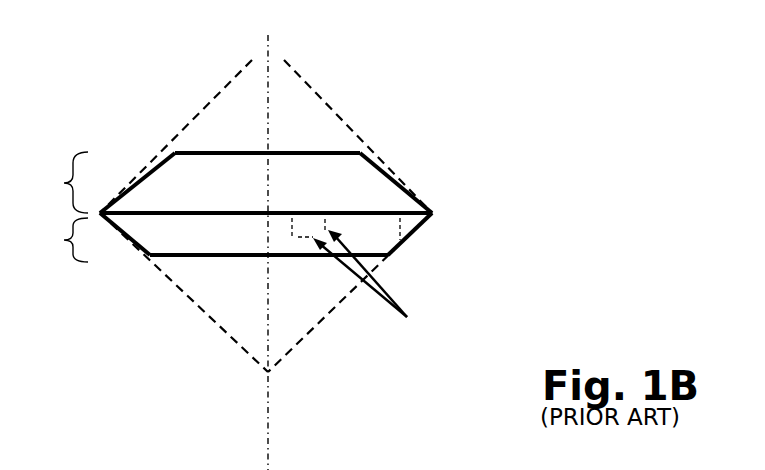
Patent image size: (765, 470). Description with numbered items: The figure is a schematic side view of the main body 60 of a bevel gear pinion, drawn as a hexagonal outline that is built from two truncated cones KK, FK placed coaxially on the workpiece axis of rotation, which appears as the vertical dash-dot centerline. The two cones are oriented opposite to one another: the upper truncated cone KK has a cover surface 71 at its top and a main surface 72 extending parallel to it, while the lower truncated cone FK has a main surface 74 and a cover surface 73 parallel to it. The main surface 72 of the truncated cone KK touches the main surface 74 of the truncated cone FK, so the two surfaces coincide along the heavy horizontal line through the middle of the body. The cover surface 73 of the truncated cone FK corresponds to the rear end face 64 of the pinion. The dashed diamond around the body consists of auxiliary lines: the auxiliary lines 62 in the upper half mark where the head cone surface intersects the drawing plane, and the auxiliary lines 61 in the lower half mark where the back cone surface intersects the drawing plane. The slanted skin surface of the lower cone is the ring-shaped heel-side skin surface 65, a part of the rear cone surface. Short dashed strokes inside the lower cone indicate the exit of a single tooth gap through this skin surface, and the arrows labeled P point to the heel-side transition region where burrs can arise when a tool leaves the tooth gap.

The main body 60 is at (287, 210).
The auxiliary lines 61 is at (230, 333).
The auxiliary lines 62 is at (237, 98).
The rear end face 64 is at (219, 284).
The heel-side skin surface 65 is at (167, 238).
The cover surface 71 is at (339, 152).
The main surface 72 is at (401, 240).
The cover surface 73 is at (202, 262).
The main surface 74 is at (150, 210).
The transition region P is at (369, 285).
The truncated cone KK is at (65, 183).
The truncated cone FK is at (65, 240).